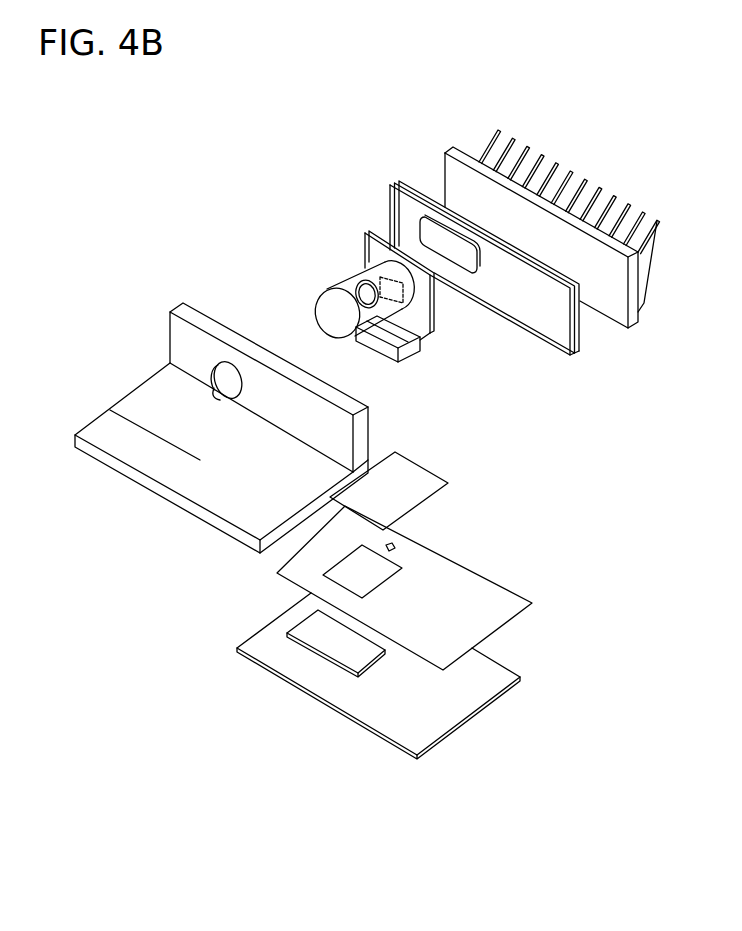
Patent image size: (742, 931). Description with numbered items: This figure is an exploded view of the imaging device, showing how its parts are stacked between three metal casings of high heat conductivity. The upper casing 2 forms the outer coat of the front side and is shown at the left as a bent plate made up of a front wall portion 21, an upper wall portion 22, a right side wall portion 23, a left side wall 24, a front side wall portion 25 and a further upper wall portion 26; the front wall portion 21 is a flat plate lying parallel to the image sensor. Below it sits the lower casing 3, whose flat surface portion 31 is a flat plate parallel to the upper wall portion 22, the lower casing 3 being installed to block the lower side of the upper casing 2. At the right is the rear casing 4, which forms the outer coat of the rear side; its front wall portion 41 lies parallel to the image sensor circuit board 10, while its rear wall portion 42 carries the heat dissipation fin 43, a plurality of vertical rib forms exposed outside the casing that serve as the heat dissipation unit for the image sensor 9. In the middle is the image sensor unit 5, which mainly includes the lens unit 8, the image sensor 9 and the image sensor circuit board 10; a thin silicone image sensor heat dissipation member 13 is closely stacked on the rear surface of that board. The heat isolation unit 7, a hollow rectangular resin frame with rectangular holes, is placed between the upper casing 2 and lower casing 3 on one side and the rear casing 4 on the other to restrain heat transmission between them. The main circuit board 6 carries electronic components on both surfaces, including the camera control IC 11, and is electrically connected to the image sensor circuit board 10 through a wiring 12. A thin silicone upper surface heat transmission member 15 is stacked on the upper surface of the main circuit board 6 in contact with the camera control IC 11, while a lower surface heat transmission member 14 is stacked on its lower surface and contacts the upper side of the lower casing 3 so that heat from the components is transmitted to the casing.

The upper casing 2 is at (201, 389).
The lower casing 3 is at (390, 694).
The rear casing 4 is at (579, 218).
The image sensor unit 5 is at (426, 250).
The main circuit board 6 is at (430, 588).
The heat isolation unit 7 is at (565, 358).
The lens unit 8 is at (351, 257).
The image sensor 9 is at (383, 279).
The image sensor circuit board 10 is at (425, 306).
The camera control IC 11 is at (383, 568).
The wiring 12 is at (400, 360).
The image sensor heat dissipation member 13 is at (424, 231).
The lower surface heat transmission member 14 is at (311, 623).
The upper surface heat transmission member 15 is at (432, 478).
The front wall portion 21 is at (178, 340).
The upper wall portion 22 is at (201, 449).
The right side wall portion 23 is at (293, 522).
The left side wall 24 is at (128, 393).
The front side wall portion 25 is at (167, 495).
The upper wall portion 26 is at (246, 336).
The flat surface portion 31 is at (443, 709).
The front wall portion 41 is at (613, 304).
The rear wall portion 42 is at (642, 272).
The heat dissipation fin 43 is at (565, 168).